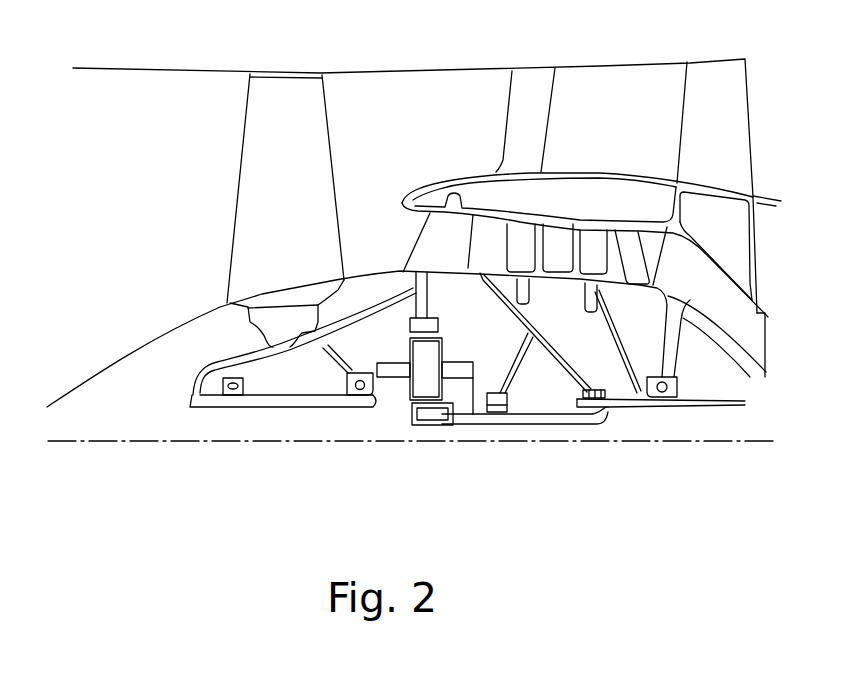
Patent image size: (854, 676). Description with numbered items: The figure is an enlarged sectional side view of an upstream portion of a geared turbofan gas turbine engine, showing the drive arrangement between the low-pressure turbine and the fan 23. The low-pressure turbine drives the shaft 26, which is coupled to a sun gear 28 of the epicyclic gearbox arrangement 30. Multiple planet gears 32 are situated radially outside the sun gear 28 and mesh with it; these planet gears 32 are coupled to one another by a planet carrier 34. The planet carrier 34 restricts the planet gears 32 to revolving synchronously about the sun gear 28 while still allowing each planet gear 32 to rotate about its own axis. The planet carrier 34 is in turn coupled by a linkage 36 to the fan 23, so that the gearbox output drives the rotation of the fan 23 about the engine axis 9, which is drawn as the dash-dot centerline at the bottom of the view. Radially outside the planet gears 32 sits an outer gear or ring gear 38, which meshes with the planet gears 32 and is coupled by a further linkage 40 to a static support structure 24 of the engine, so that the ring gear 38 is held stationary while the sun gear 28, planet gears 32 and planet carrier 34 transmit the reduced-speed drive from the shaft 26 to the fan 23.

The engine axis 9 is at (218, 443).
The fan 23 is at (252, 191).
The static support structure 24 is at (433, 240).
The shaft 26 is at (556, 426).
The sun gear 28 is at (430, 412).
The epicyclic gearbox arrangement 30 is at (379, 412).
The planet gears 32 is at (412, 402).
The planet carrier 34 is at (463, 404).
The linkage 36 is at (383, 395).
The ring gear 38 is at (408, 329).
The linkage 40 is at (430, 302).